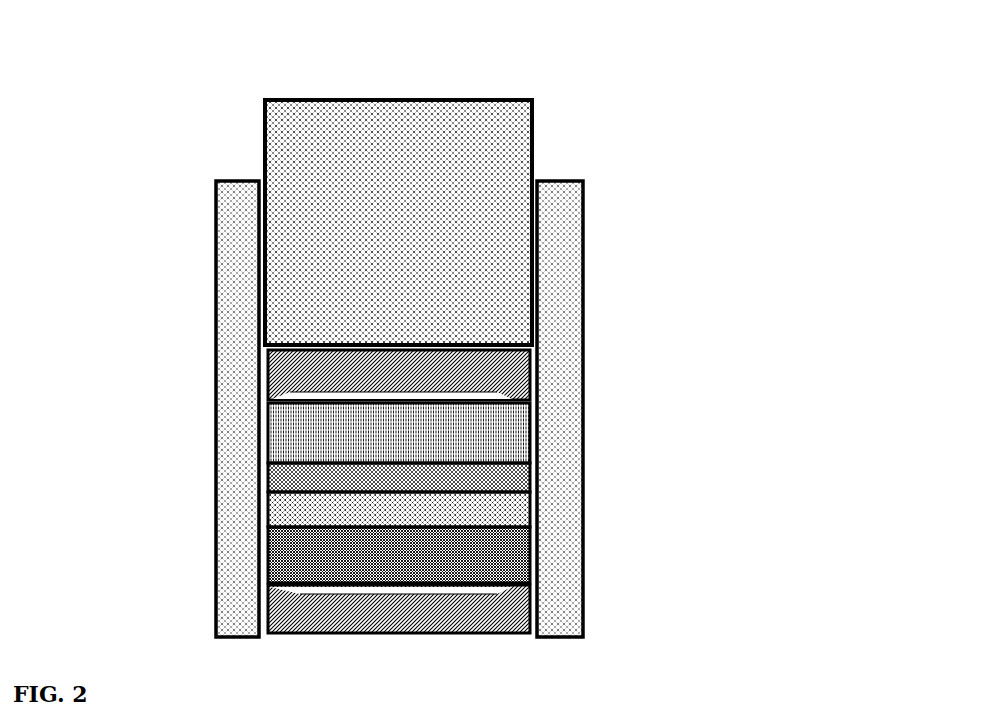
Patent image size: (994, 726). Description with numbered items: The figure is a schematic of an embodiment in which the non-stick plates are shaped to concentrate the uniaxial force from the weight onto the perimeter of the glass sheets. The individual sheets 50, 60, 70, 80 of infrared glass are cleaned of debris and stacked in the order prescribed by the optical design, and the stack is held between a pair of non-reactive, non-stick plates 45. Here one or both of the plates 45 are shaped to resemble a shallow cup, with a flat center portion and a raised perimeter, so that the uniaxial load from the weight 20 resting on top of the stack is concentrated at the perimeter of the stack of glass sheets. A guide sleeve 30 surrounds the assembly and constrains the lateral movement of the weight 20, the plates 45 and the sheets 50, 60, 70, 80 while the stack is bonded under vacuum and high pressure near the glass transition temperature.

The weight 20 is at (475, 92).
The guide sleeve 30 is at (243, 193).
The shaped non-stick plates 45 is at (292, 608).
The individual sheet 50 is at (517, 448).
The individual sheet 60 is at (507, 482).
The individual sheet 70 is at (510, 510).
The individual sheet 80 is at (512, 562).